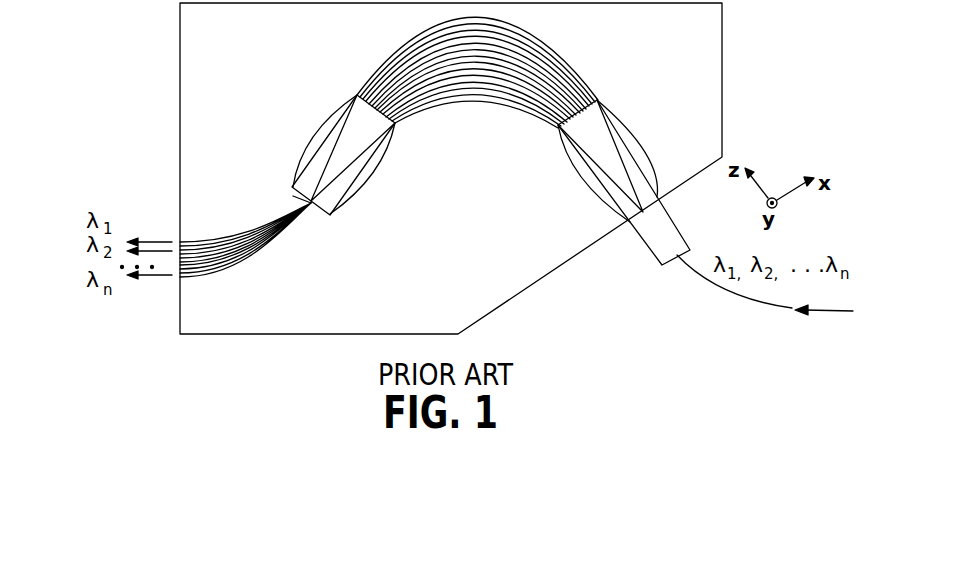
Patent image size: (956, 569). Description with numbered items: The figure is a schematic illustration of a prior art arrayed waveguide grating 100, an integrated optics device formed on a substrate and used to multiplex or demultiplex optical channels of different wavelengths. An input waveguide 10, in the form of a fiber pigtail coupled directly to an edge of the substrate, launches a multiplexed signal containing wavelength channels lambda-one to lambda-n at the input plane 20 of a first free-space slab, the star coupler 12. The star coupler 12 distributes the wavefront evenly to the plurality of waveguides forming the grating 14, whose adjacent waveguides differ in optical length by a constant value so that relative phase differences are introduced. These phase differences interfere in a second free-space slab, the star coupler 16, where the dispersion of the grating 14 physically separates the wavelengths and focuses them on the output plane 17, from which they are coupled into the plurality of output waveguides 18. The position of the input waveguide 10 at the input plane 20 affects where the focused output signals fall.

The arrayed waveguide grating 100 is at (760, 49).
The input waveguide 10 is at (707, 283).
The star coupler 12 is at (606, 210).
The grating 14 is at (483, 97).
The second star coupler 16 is at (347, 188).
The output plane 17 is at (288, 200).
The output waveguides 18 is at (265, 255).
The input plane 20 is at (630, 220).